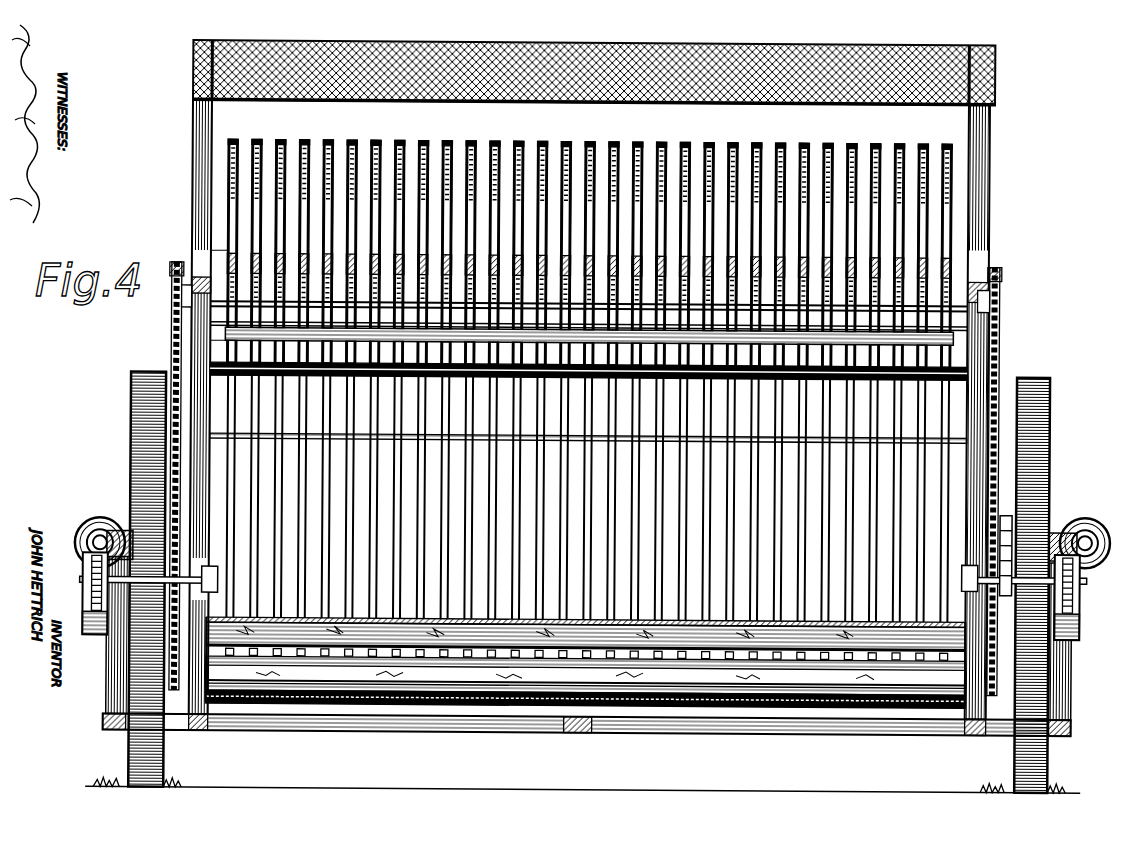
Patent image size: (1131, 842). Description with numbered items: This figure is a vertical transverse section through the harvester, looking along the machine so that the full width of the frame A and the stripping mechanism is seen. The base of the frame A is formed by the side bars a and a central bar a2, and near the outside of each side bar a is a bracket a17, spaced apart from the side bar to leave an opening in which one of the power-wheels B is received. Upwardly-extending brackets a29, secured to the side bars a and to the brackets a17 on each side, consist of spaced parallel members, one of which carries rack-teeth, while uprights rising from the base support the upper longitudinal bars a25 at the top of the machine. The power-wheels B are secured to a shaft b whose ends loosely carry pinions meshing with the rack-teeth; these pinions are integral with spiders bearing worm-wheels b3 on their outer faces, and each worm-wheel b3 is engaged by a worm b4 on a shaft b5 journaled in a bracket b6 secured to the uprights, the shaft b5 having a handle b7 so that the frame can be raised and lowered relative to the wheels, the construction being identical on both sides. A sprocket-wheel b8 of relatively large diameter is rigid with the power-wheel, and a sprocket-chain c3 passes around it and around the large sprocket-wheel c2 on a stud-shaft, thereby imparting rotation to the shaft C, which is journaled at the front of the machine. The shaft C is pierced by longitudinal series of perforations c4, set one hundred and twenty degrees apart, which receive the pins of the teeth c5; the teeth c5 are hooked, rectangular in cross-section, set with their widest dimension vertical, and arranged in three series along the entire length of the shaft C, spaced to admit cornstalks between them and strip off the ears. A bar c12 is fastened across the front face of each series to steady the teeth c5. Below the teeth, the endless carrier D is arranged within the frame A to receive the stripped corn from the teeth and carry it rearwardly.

The top cross beam g is at (594, 59).
The frame A is at (196, 156).
The side bars a is at (200, 731).
The central bar a2 is at (584, 731).
The brackets a17 is at (113, 731).
The upper longitudinal bars a25 is at (184, 262).
The upwardly-extending brackets a29 is at (118, 700).
The power-wheels B is at (135, 424).
The shaft b is at (220, 578).
The worm-wheels b3 is at (86, 582).
The worm b4 is at (83, 541).
The shaft b5 is at (108, 530).
The bracket b6 is at (98, 640).
The handle b7 is at (96, 520).
The sprocket-wheel b8 is at (121, 530).
The shaft C is at (188, 348).
The sprocket-wheel c2 is at (180, 266).
The sprocket-chain c3 is at (176, 313).
The perforations c4 is at (958, 356).
The teeth c5 is at (541, 141).
The bar c12 is at (932, 301).
The endless carrier D is at (416, 681).